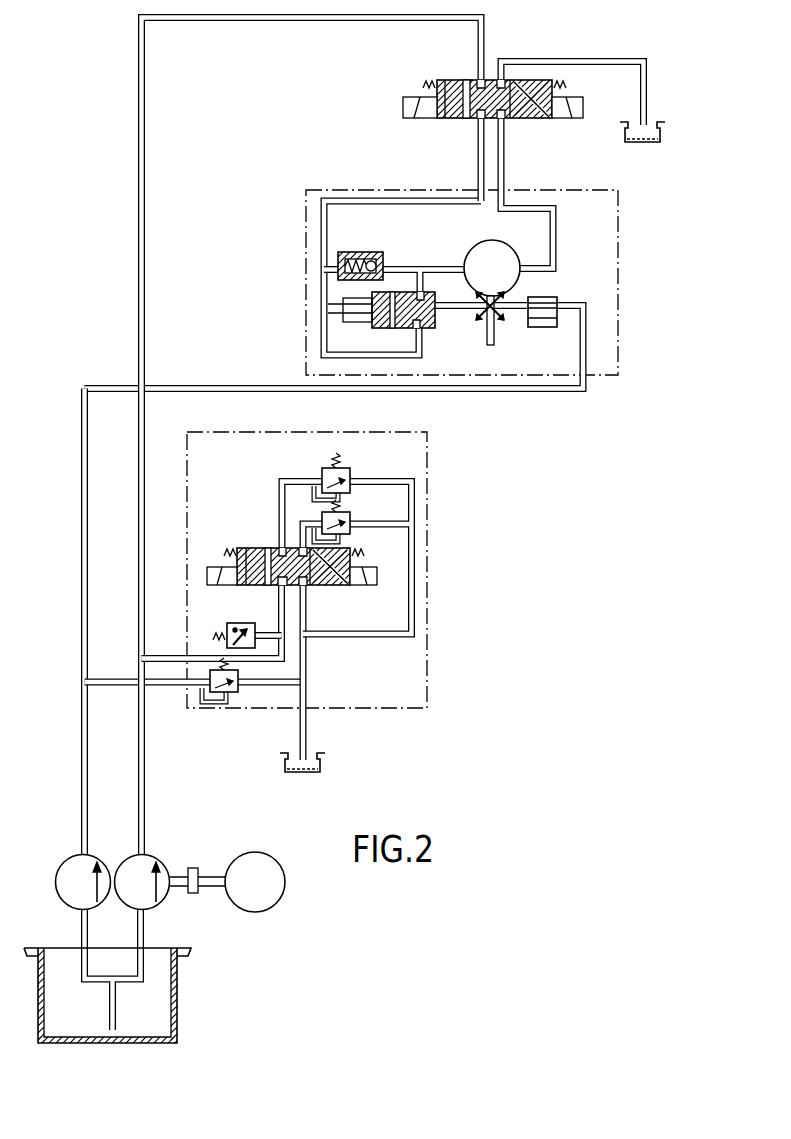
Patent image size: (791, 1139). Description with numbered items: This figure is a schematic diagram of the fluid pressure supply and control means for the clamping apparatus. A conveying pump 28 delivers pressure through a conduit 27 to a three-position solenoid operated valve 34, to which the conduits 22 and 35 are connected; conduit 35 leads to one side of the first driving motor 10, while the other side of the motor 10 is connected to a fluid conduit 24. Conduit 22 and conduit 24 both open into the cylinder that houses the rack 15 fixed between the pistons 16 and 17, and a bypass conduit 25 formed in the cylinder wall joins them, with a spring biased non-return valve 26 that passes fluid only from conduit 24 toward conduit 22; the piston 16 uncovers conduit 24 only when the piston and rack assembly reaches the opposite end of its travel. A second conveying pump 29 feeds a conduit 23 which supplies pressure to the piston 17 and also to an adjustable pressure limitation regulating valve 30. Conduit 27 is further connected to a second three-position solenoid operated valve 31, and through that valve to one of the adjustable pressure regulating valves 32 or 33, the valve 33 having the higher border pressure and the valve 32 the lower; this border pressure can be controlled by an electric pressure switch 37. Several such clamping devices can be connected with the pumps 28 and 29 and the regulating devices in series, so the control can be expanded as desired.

The motor 10 is at (505, 246).
The rack 15 is at (483, 312).
The piston 16 is at (350, 298).
The piston 17 is at (541, 327).
The fluid pressure conduit 22 is at (323, 242).
The conduit 23 is at (79, 432).
The fluid conduit 24 is at (433, 265).
The bypass conduit 25 is at (330, 263).
The non-return valve 26 is at (364, 256).
The conduit 27 is at (147, 152).
The conveying pump 28 is at (160, 893).
The conveying pump 29 is at (72, 862).
The regulating valve 30 is at (228, 702).
The three-position solenoid operated valve 31 is at (257, 548).
The adjustable pressure regulating valve 32 is at (322, 470).
The adjustable pressure regulating valve 33 is at (350, 525).
The three-position solenoid operated valve 34 is at (457, 80).
The conduit 35 is at (557, 243).
The electric pressure switch 37 is at (232, 623).